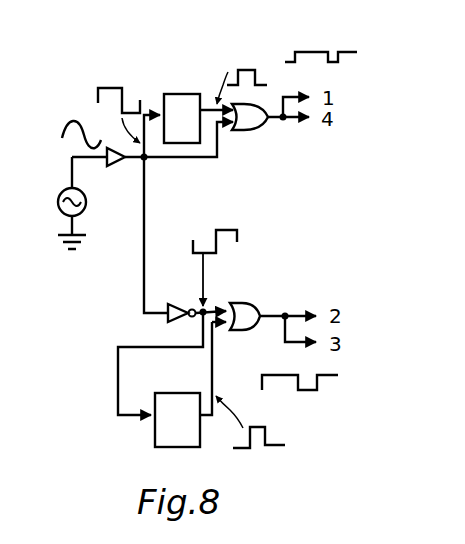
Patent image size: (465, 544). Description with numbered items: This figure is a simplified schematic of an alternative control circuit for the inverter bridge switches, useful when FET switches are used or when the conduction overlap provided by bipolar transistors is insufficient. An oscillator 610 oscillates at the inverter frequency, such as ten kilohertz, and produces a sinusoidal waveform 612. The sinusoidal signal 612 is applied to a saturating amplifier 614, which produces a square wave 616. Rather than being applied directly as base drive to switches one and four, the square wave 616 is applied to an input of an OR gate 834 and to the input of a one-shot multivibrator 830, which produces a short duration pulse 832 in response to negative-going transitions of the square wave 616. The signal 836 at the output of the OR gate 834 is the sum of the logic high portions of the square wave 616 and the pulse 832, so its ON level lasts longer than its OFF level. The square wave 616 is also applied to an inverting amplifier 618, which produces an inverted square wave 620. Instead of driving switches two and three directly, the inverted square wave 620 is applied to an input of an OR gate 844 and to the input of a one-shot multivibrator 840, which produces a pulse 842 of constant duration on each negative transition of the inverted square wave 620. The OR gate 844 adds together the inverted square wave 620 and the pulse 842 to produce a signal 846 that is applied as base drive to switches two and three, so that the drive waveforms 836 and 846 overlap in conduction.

The oscillator 610 is at (85, 213).
The sinusoidal waveform 612 is at (73, 121).
The saturating amplifier 614 is at (114, 166).
The square wave 616 is at (126, 88).
The inverting amplifier 618 is at (173, 304).
The inverted square wave 620 is at (238, 240).
The one-shot multivibrator 830 is at (183, 94).
The short duration pulse 832 is at (247, 70).
The OR gate 834 is at (250, 131).
The output signal 836 is at (314, 52).
The one-shot multivibrator 840 is at (180, 393).
The constant duration pulse 842 is at (270, 436).
The OR gate 844 is at (238, 303).
The resulting signal 846 is at (317, 390).